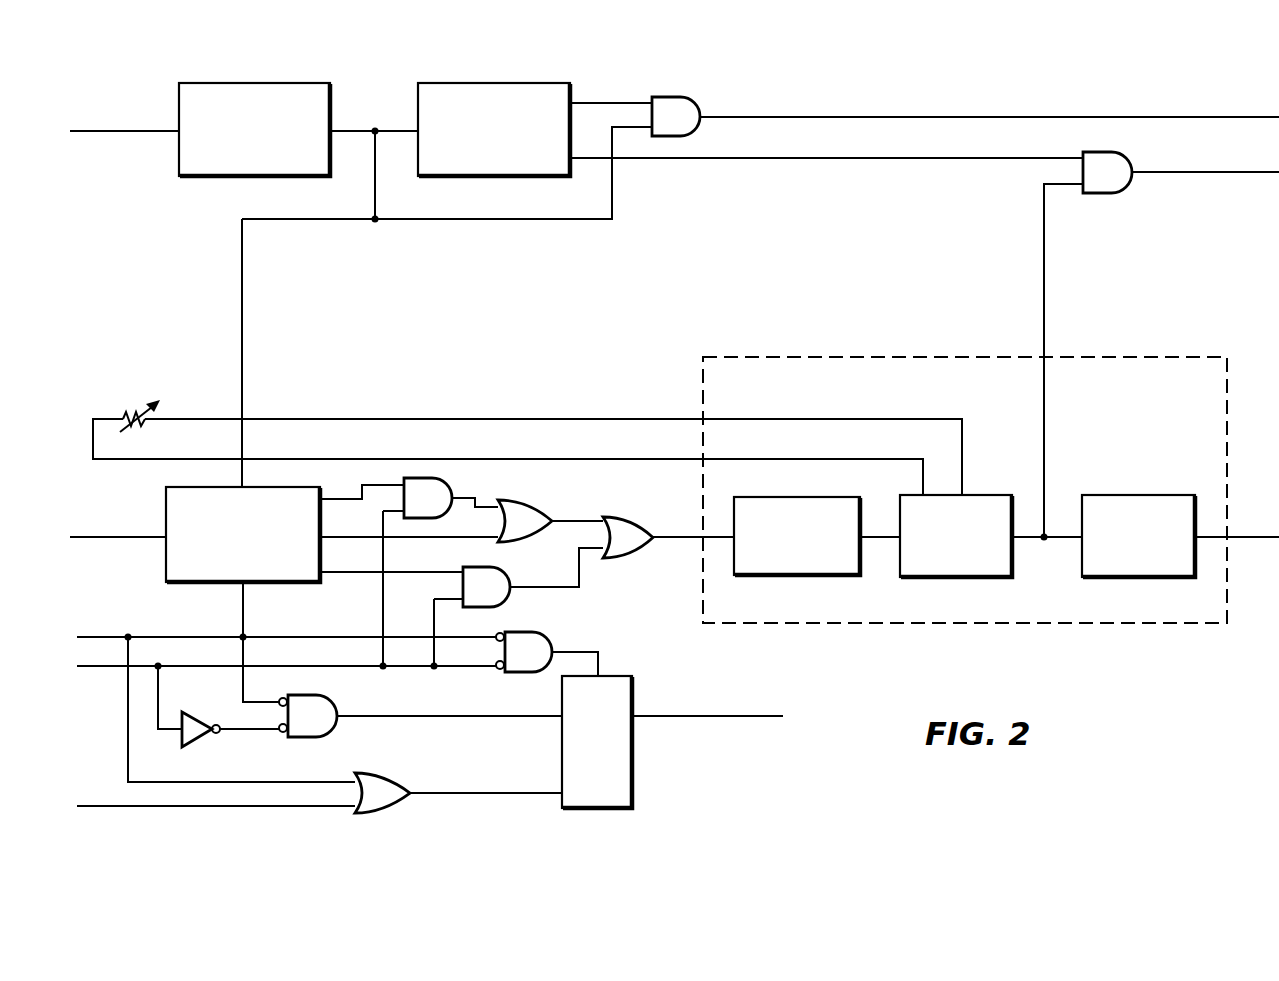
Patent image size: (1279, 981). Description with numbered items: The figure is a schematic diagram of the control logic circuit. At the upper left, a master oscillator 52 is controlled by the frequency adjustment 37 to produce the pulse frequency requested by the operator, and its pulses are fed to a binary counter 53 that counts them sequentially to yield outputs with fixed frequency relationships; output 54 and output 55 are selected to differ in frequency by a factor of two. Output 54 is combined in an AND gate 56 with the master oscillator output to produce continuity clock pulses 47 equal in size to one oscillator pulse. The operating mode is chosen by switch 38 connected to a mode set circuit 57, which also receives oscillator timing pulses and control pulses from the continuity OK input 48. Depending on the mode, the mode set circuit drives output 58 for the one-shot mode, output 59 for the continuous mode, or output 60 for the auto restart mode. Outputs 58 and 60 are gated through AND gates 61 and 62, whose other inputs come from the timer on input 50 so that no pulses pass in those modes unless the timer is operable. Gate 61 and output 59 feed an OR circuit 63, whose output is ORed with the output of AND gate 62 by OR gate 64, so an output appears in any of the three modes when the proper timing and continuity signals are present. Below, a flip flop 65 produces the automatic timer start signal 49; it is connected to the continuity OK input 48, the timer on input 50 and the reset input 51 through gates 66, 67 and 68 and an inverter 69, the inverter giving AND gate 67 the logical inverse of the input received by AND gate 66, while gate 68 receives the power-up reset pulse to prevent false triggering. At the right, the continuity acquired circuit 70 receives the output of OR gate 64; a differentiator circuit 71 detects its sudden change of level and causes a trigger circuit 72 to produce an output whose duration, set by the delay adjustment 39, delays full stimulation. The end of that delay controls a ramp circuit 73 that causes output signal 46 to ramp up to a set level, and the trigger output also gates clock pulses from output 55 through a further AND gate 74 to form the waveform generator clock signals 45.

The frequency adjustment 37 is at (135, 131).
The switch 38 is at (109, 537).
The delay adjustment 39 is at (131, 410).
The waveform generator clock signals 45 is at (1183, 172).
The output signal 46 is at (1270, 532).
The continuity clock pulses 47 is at (1185, 118).
The continuity OK input 48 is at (98, 636).
The automatic timer start signal 49 is at (740, 716).
The timer on input 50 is at (101, 669).
The reset input 51 is at (90, 806).
The master oscillator 52 is at (330, 90).
The binary counter 53 is at (556, 92).
The output 54 is at (605, 103).
The output 55 is at (630, 160).
The AND gate 56 is at (683, 128).
The mode set circuit 57 is at (166, 497).
The output 58 is at (349, 495).
The output 59 is at (357, 536).
The output 60 is at (363, 571).
The AND gate 61 is at (440, 488).
The AND gate 62 is at (497, 578).
The OR circuit 63 is at (527, 512).
The OR gate 64 is at (626, 526).
The flip flop 65 is at (632, 694).
The AND gate 66 is at (540, 644).
The AND gate 67 is at (323, 705).
The gate 68 is at (388, 777).
The inverter 69 is at (198, 712).
The continuity acquired circuit 70 is at (703, 392).
The differentiator circuit 71 is at (845, 497).
The trigger circuit 72 is at (975, 495).
The ramp circuit 73 is at (1186, 495).
The AND gate 74 is at (1105, 186).